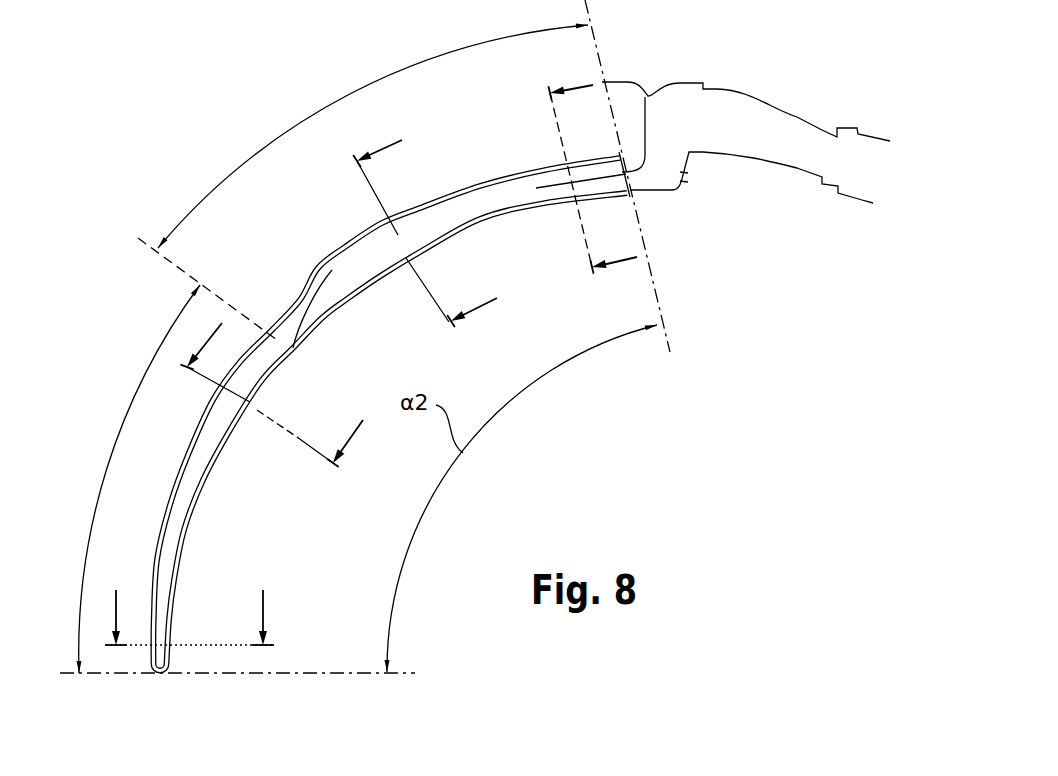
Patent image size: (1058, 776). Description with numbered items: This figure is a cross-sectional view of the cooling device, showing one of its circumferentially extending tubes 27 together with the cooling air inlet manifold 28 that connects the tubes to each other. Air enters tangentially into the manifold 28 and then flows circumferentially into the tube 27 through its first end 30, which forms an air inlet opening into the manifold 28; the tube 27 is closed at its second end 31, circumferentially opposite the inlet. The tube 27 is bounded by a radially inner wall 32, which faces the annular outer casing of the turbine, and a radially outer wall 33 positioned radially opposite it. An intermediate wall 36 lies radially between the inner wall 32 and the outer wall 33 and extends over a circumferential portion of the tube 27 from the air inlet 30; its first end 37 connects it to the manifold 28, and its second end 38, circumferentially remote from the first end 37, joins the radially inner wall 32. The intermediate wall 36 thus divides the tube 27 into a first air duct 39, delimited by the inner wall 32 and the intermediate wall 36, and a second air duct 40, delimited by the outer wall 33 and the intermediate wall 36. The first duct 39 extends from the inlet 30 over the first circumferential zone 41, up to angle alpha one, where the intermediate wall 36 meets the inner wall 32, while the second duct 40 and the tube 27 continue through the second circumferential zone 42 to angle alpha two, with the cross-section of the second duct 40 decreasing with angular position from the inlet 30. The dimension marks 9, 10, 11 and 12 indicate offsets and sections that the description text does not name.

The offset distance 9 is at (592, 165).
The offset distance 10 is at (425, 226).
The offset distance 11 is at (271, 392).
The offset distance 12 is at (178, 617).
The tube 27 is at (310, 268).
The cooling air inlet manifold 28 is at (718, 120).
The first end 30 is at (632, 193).
The second end 31 is at (179, 668).
The radially inner wall 32 is at (500, 221).
The radially outer wall 33 is at (488, 174).
The intermediate wall 36 is at (537, 188).
The first end 37 is at (645, 97).
The second end 38 is at (295, 350).
The first air duct 39 is at (430, 228).
The second air duct 40 is at (201, 477).
The first circumferential zone 41 is at (345, 96).
The second circumferential zone 42 is at (103, 466).